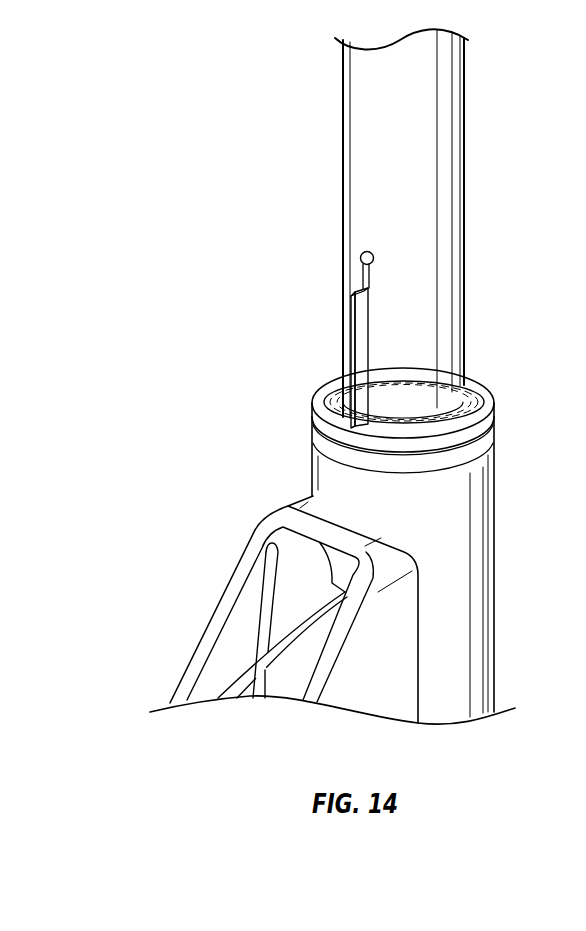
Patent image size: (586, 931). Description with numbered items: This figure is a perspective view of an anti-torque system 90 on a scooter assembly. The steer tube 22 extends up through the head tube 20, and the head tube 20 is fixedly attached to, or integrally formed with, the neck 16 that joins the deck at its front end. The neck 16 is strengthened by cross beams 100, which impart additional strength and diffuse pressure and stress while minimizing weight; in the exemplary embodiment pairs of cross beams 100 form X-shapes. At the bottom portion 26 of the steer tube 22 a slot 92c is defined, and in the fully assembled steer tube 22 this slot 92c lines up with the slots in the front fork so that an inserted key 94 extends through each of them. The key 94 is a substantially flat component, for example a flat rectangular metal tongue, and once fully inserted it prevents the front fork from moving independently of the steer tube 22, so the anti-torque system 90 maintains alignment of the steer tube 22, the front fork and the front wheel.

The steer tube 22 is at (362, 82).
The bottom portion of steer tube 26 is at (447, 301).
The anti-torque system 90 is at (311, 361).
The slot 92c is at (363, 272).
The key 94 is at (353, 320).
The head tube 20 is at (478, 568).
The neck 16 is at (268, 518).
The cross beams 100 is at (267, 608).